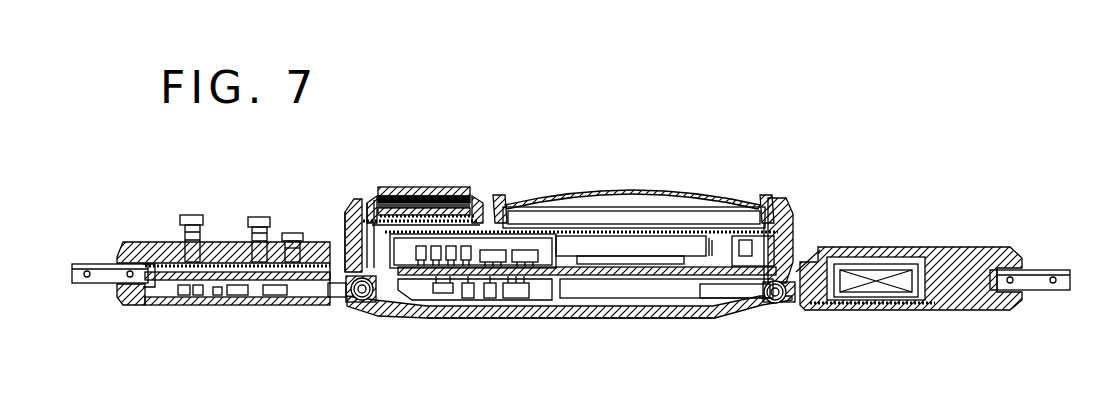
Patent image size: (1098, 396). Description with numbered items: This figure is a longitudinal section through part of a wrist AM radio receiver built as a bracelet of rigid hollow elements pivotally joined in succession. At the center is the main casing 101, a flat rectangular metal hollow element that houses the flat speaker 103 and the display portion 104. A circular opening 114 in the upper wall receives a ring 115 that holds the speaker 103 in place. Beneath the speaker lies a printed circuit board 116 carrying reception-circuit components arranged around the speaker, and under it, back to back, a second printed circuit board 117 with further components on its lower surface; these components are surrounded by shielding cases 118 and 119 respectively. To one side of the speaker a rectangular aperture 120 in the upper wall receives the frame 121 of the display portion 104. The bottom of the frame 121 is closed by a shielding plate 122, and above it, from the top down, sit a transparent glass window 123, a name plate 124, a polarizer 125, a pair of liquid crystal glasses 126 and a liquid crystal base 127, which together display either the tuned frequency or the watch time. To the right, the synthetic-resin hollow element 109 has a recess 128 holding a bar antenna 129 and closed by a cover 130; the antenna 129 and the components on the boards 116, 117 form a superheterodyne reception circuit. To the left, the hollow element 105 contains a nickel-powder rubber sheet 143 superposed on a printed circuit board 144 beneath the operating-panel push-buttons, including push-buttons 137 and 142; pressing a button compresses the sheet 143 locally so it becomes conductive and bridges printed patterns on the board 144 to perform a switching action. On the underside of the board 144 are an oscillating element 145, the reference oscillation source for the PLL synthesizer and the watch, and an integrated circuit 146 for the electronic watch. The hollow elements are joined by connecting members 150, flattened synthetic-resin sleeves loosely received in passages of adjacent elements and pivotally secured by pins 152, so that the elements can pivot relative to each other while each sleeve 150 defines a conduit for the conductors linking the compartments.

The main casing 101 is at (608, 330).
The speaker 103 is at (626, 214).
The display portion 104 is at (427, 148).
The hollow element 105 is at (212, 247).
The hollow element 109 is at (909, 273).
The circular opening 114 is at (777, 202).
The ring 115 is at (772, 193).
The printed circuit board 116 is at (733, 272).
The printed circuit board 117 is at (497, 306).
The shielding case 118 is at (542, 202).
The shielding case 119 is at (420, 292).
The rectangular aperture 120 is at (360, 202).
The frame 121 is at (376, 190).
The shielding plate 122 is at (352, 225).
The transparent glass window 123 is at (397, 189).
The name plate 124 is at (420, 190).
The polarizer 125 is at (442, 190).
The liquid crystal glasses 126 is at (457, 190).
The liquid crystal base 127 is at (451, 176).
The recess 128 is at (910, 260).
The bar antenna 129 is at (865, 287).
The cover 130 is at (909, 306).
The push-button 137 is at (263, 217).
The push-button 142 is at (198, 216).
The rubber sheet 143 is at (168, 241).
The printed circuit board 144 is at (167, 303).
The oscillating element 145 is at (217, 303).
The integrated circuit 146 is at (278, 303).
The connecting member 150 is at (77, 286).
The pin 152 is at (127, 265).